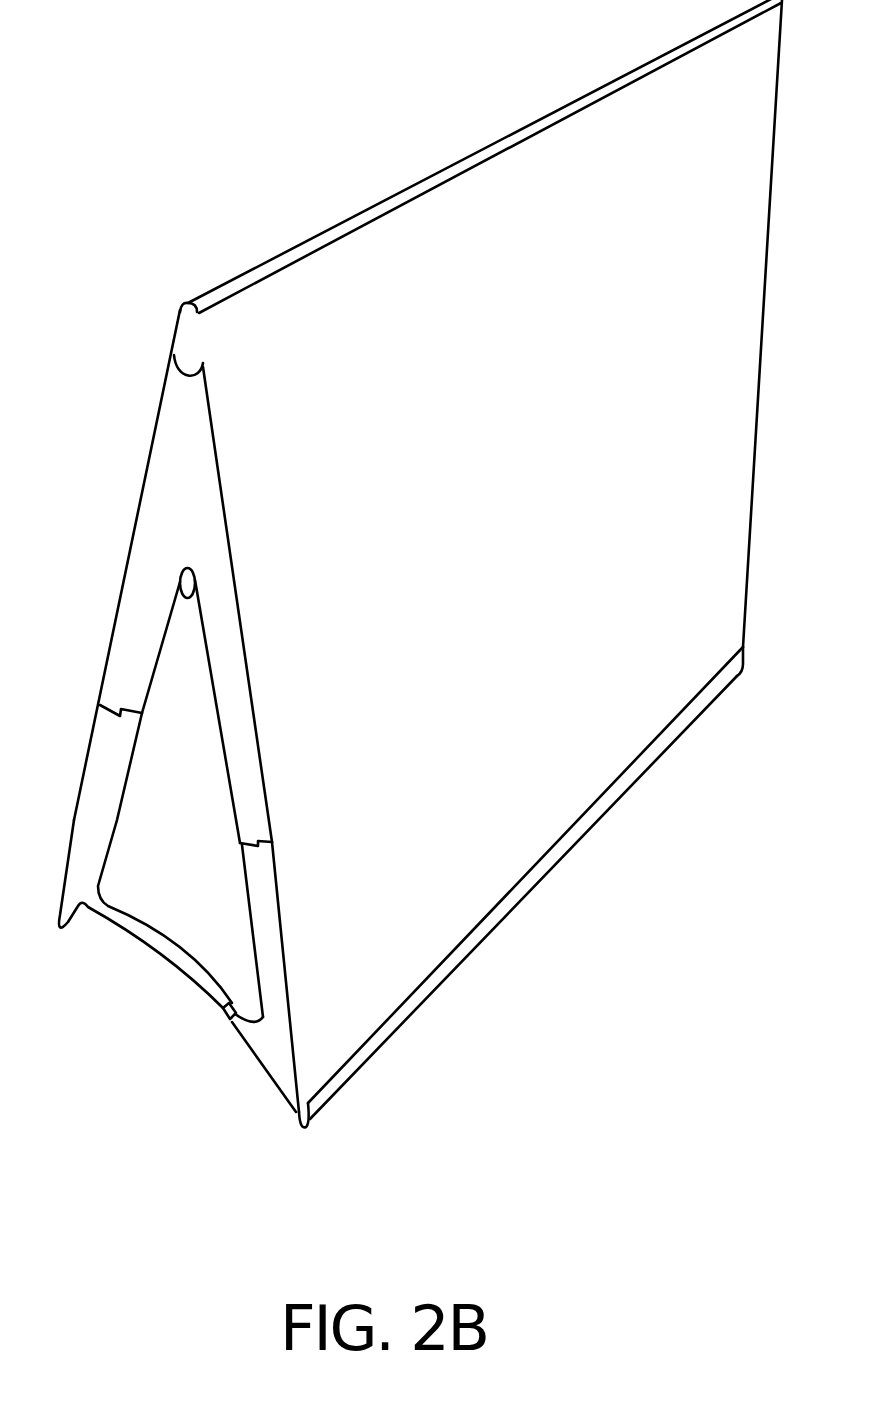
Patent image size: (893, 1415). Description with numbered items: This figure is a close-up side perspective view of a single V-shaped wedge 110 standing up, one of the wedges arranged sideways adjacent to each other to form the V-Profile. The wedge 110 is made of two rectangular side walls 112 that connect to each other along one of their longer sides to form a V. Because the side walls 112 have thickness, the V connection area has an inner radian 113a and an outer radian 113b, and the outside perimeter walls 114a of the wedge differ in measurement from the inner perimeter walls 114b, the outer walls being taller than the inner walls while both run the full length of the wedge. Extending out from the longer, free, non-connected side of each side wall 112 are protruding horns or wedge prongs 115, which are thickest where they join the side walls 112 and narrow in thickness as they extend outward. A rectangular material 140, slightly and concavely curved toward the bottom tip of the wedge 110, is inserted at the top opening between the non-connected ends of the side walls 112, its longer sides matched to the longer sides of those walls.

The V-shaped wedge 110 is at (311, 95).
The rectangular side wall 112 is at (113, 724).
The inner radian 113a is at (187, 606).
The outer radian 113b is at (197, 372).
The outside perimeter wall 114a is at (262, 710).
The inner perimeter wall 114b is at (222, 792).
The wedge prong 115 is at (313, 1129).
The rectangular material 140 is at (227, 1022).